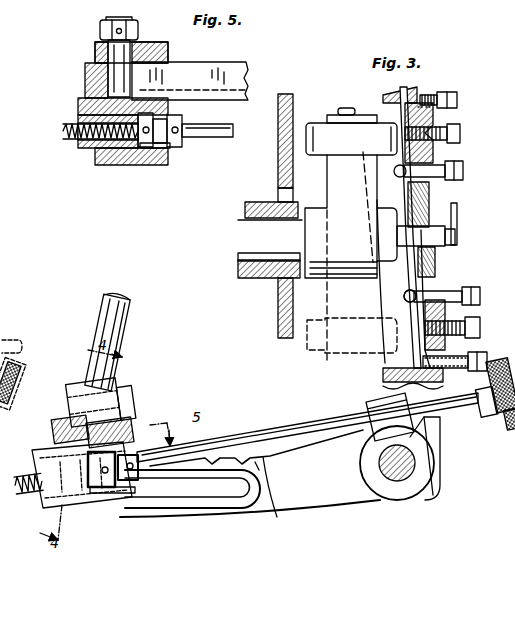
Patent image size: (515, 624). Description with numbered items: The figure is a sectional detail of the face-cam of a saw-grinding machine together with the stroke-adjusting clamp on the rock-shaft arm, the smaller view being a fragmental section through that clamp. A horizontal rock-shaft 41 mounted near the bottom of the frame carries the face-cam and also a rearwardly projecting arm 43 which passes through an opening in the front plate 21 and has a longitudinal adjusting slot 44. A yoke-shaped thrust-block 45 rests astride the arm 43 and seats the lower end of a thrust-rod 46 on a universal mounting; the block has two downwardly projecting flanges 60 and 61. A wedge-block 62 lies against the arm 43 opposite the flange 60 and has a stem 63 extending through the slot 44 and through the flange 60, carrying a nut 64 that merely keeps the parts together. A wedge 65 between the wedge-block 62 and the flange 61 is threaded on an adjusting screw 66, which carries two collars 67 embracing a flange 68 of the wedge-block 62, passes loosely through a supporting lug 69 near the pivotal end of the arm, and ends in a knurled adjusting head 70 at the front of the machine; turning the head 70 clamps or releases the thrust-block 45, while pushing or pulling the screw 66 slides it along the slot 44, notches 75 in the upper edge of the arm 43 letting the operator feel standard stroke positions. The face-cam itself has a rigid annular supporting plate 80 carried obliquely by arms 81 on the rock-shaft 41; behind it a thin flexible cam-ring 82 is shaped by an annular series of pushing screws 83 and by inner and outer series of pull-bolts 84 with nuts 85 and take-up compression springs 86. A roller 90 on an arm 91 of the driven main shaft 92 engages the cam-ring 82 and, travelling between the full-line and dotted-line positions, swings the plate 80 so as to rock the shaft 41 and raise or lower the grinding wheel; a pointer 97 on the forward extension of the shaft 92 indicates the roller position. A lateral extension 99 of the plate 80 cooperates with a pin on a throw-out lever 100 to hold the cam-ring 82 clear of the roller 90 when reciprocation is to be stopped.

In FIG. 3, the front plate 21 is at (275, 320).
In FIG. 3, the rock-shaft 41 is at (400, 480).
In FIG. 5, the arm 43 is at (85, 85).
In FIG. 3, the arm 43 is at (352, 495).
In FIG. 5, the adjusting slot 44 is at (222, 72).
In FIG. 3, the adjusting slot 44 is at (220, 492).
In FIG. 5, the thrust-block 45 is at (147, 42).
In FIG. 3, the thrust-block 45 is at (58, 415).
In FIG. 3, the thrust-rod 46 is at (125, 335).
In FIG. 5, the flange 60 is at (168, 50).
In FIG. 5, the flange 61 is at (140, 165).
In FIG. 5, the wedge-block 62 is at (140, 103).
In FIG. 3, the wedge-block 62 is at (60, 500).
In FIG. 5, the stem 63 is at (112, 55).
In FIG. 5, the nut 64 is at (100, 27).
In FIG. 5, the wedge 65 is at (80, 148).
In FIG. 3, the wedge 65 is at (38, 475).
In FIG. 5, the adjusting screw 66 is at (235, 128).
In FIG. 3, the adjusting screw 66 is at (262, 428).
In FIG. 5, the collars 67 is at (150, 113).
In FIG. 3, the collars 67 is at (145, 447).
In FIG. 5, the flange 68 is at (167, 158).
In FIG. 3, the flange 68 is at (127, 482).
In FIG. 3, the supporting lug 69 is at (378, 405).
In FIG. 3, the knurled adjusting head 70 is at (497, 418).
In FIG. 3, the notches 75 is at (270, 468).
In FIG. 3, the supporting plate 80 is at (433, 110).
In FIG. 3, the arms 81 is at (437, 432).
In FIG. 3, the flexible cam-ring 82 is at (425, 295).
In FIG. 3, the screws 83 is at (462, 134).
In FIG. 3, the pull-bolts 84 is at (455, 97).
In FIG. 3, the nuts 85 is at (402, 93).
In FIG. 3, the compression springs 86 is at (437, 93).
In FIG. 3, the roller 90 is at (316, 123).
In FIG. 3, the arm 91 is at (351, 256).
In FIG. 3, the main shaft 92 is at (255, 240).
In FIG. 3, the pointer 97 is at (458, 217).
In FIG. 3, the lateral extension 99 is at (13, 347).
In FIG. 3, the throw-out lever 100 is at (13, 303).